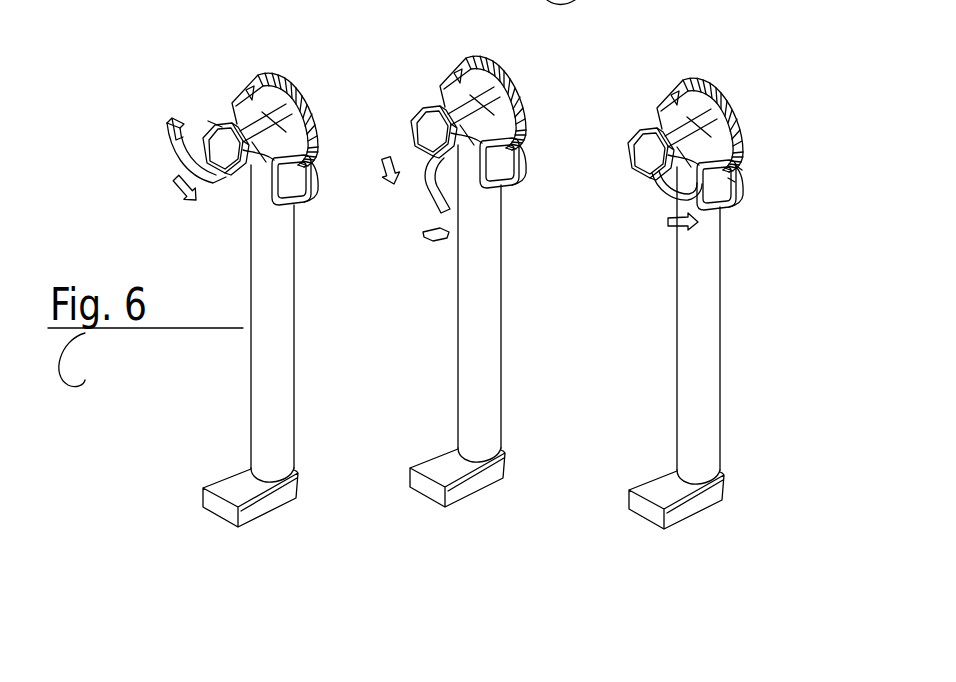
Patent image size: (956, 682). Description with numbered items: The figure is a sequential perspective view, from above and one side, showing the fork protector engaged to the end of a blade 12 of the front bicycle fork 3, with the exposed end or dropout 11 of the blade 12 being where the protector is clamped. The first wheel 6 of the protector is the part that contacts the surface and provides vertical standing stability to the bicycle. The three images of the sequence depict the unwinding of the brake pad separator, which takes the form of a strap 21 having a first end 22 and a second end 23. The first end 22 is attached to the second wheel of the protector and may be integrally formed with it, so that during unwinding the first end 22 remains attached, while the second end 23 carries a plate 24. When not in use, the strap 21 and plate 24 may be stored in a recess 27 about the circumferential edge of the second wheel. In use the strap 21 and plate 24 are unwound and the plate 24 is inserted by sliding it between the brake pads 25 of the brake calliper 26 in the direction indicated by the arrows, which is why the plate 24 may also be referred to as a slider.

The bicycle fork 3 is at (285, 360).
The first wheel 6 is at (273, 72).
The dropout 11 is at (220, 127).
The blade 12 is at (290, 210).
The strap 21 is at (173, 160).
The first end 22 is at (238, 166).
The second end 23 is at (418, 222).
The plate 24 is at (173, 117).
The brake pads 25 is at (740, 167).
The brake calliper 26 is at (733, 180).
The recess 27 is at (215, 122).